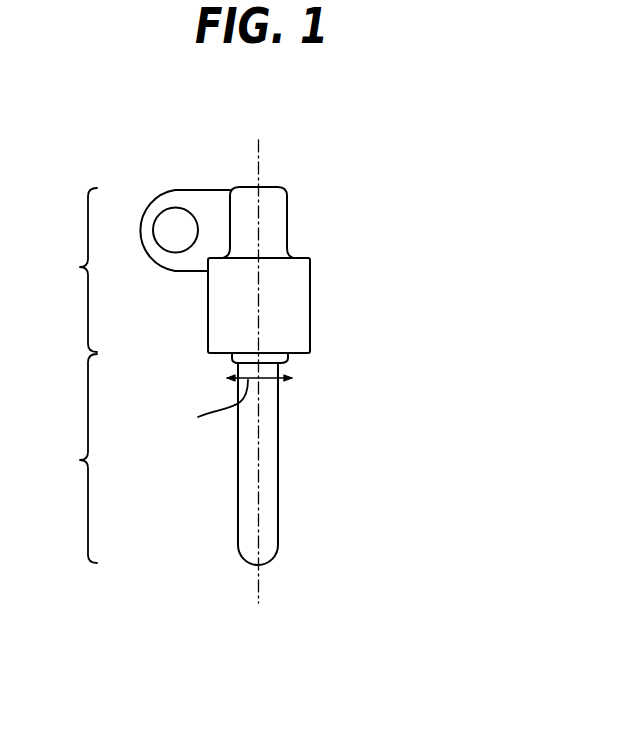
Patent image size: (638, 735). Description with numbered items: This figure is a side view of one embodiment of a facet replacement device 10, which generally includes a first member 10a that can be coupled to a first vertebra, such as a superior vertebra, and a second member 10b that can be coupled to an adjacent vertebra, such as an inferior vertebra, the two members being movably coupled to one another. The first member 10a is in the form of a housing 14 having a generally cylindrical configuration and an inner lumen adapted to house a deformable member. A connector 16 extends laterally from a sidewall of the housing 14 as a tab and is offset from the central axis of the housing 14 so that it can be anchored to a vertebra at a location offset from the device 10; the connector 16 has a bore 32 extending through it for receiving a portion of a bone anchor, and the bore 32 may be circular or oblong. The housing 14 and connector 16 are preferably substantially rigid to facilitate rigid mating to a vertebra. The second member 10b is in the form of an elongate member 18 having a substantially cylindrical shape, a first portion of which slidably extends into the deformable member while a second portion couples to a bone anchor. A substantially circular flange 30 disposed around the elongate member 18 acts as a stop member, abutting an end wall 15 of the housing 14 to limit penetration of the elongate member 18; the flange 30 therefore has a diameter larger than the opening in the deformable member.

The facet replacement device 10 is at (382, 180).
The first member 10a is at (63, 270).
The second member 10b is at (63, 458).
The housing 14 is at (310, 308).
The end wall 15 is at (290, 355).
The connector 16 is at (178, 190).
The elongate member 18 is at (278, 422).
The flange 30 is at (233, 357).
The bore 32 is at (167, 228).